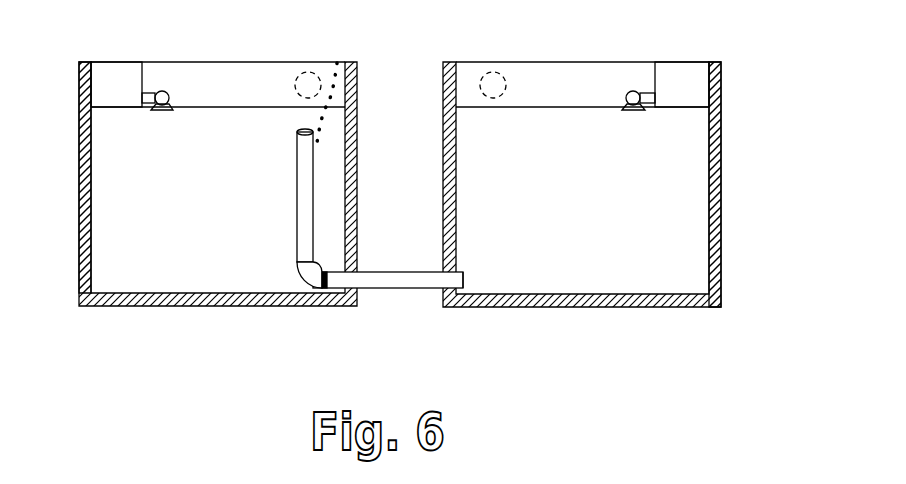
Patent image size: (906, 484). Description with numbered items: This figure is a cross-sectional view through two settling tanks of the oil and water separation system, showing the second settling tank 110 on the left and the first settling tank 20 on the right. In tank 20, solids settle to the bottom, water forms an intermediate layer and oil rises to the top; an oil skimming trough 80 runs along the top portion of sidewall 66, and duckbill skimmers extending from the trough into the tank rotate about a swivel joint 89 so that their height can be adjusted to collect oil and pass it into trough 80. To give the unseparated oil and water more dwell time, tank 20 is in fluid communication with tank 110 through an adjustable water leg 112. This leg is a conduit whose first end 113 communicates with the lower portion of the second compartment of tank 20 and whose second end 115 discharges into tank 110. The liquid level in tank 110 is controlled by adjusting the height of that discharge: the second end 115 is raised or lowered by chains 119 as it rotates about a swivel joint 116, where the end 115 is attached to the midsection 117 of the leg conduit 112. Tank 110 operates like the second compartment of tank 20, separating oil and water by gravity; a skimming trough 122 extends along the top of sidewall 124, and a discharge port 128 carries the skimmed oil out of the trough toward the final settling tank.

The settling tank 20 is at (722, 135).
The sidewall 66 is at (721, 88).
The oil skimming trough 80 is at (683, 85).
The swivel joint 89 is at (485, 75).
The second settling tank 110 is at (80, 215).
The adjustable water leg 112 is at (410, 282).
The first end 113 is at (463, 272).
The second end 115 is at (297, 132).
The swivel joint 116 is at (327, 295).
The midsection 117 is at (333, 271).
The chains 119 is at (320, 64).
The skimming trough 122 is at (112, 73).
The sidewall 124 is at (80, 108).
The discharge port 128 is at (293, 87).